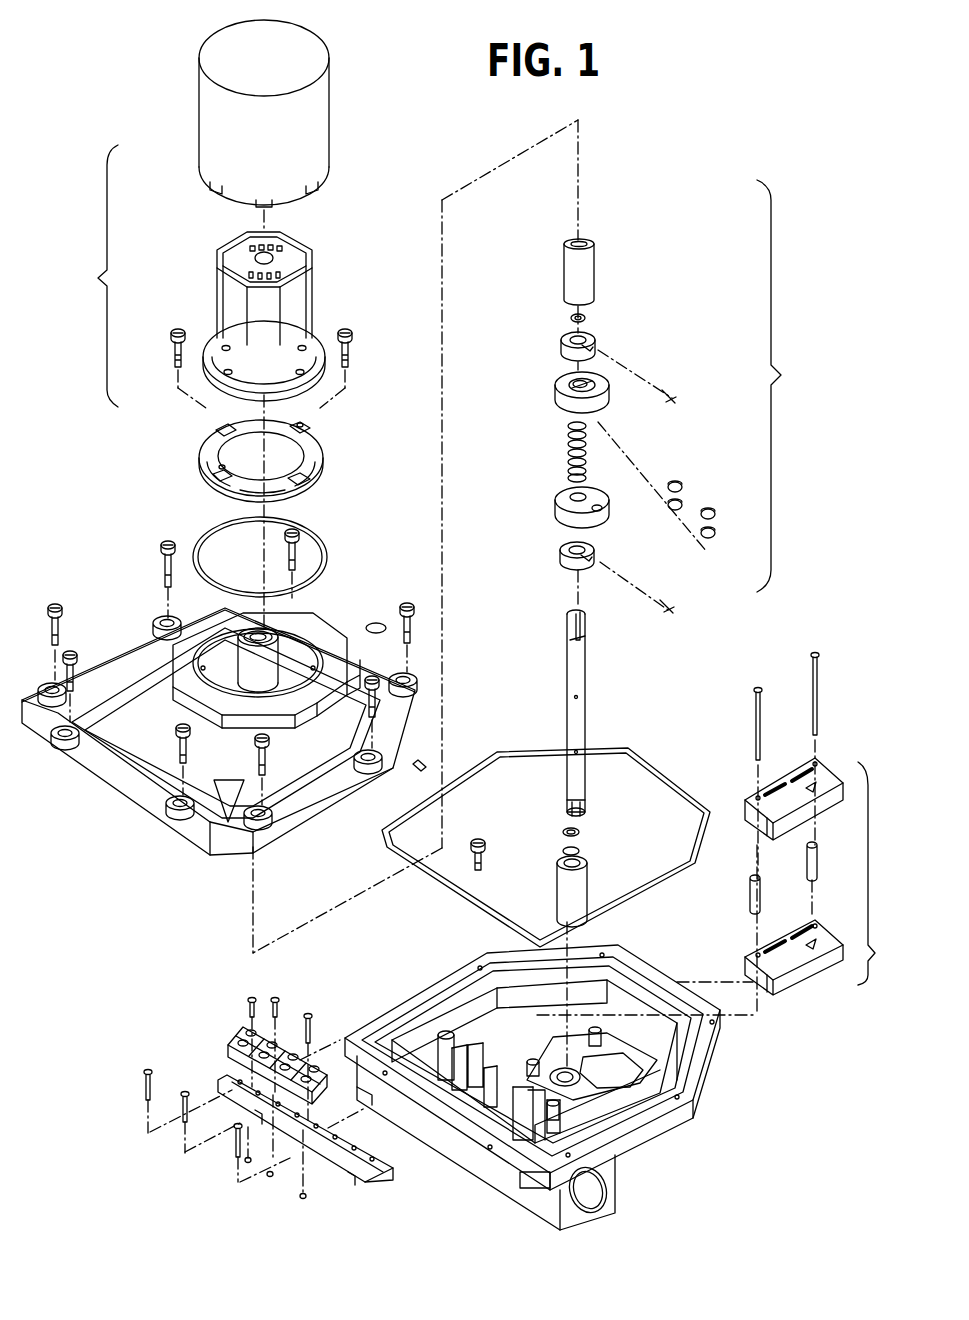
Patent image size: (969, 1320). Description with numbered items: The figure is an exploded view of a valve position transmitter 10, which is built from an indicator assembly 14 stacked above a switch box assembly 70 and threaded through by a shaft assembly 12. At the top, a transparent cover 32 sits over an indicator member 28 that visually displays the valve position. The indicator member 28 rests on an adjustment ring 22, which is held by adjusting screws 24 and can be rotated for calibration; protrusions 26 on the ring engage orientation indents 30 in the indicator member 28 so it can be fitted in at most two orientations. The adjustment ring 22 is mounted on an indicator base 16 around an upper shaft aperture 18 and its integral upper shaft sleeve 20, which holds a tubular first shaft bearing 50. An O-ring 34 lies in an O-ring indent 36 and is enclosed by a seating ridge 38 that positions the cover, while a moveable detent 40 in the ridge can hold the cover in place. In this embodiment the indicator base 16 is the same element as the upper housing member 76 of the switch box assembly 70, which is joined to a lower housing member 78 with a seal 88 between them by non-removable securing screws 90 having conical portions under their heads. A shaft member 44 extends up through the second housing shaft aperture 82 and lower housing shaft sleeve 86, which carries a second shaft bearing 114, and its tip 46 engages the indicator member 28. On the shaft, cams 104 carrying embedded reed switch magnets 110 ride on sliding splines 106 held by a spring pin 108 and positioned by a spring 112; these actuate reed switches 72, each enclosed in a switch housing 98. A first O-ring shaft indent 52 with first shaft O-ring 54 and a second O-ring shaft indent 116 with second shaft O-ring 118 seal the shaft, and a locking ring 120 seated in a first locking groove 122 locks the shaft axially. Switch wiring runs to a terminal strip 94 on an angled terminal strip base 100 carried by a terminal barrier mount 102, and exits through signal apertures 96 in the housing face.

The valve position transmitter 10 is at (154, 97).
The shaft assembly 12 is at (786, 386).
The indicator assembly 14 is at (89, 276).
The indicator base 16 is at (168, 625).
The upper shaft aperture 18 is at (280, 630).
The upper shaft sleeve 20 is at (268, 658).
The adjustment ring 22 is at (324, 460).
The adjusting screws 24 is at (170, 351).
The protrusions 26 is at (308, 430).
The indicator member 28 is at (314, 246).
The orientation indents 30 is at (228, 385).
The transparent cover 32 is at (328, 118).
The O-ring 34 is at (326, 562).
The O-ring indent 36 is at (200, 657).
The seating ridge 38 is at (197, 690).
The moveable detent 40 is at (426, 768).
The shaft member 44 is at (566, 668).
The tip 46 is at (587, 622).
The first shaft bearing 50 is at (596, 270).
The first O-ring shaft indent 52 is at (588, 640).
The first shaft O-ring 54 is at (570, 317).
The switch box assembly 70 is at (851, 890).
The switches 72 is at (826, 762).
The upper housing member 76 is at (135, 782).
The lower housing member 78 is at (648, 1150).
The second housing shaft aperture 82 is at (615, 1062).
The lower housing shaft sleeve 86 is at (655, 1147).
The seal 88 is at (541, 750).
The securing screws 90 is at (409, 600).
The terminal strip 94 is at (240, 1030).
The signal apertures 96 is at (597, 1198).
The switch housing 98 is at (790, 1003).
The terminal strip base 100 is at (375, 1178).
The terminal barrier mount 102 is at (444, 1033).
The cams 104 is at (556, 400).
The sliding splines 106 is at (598, 343).
The spring pin 108 is at (672, 396).
The reed switch magnets 110 is at (716, 531).
The spring 112 is at (566, 453).
The second shaft bearing 114 is at (590, 895).
The second O-ring shaft indent 116 is at (586, 800).
The second shaft O-ring 118 is at (562, 850).
The locking ring 120 is at (582, 832).
The first locking groove 122 is at (567, 806).